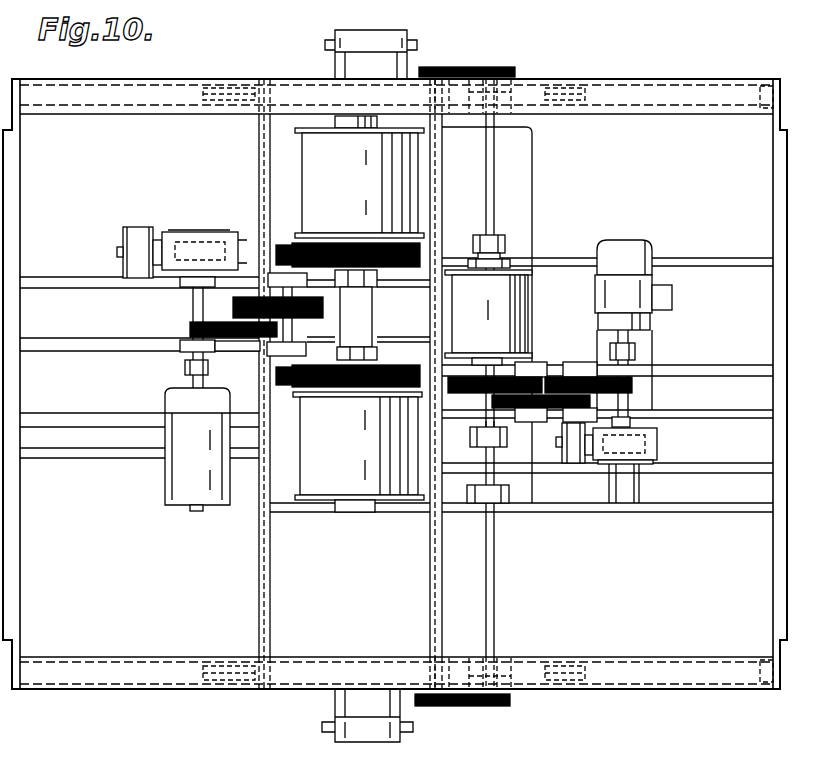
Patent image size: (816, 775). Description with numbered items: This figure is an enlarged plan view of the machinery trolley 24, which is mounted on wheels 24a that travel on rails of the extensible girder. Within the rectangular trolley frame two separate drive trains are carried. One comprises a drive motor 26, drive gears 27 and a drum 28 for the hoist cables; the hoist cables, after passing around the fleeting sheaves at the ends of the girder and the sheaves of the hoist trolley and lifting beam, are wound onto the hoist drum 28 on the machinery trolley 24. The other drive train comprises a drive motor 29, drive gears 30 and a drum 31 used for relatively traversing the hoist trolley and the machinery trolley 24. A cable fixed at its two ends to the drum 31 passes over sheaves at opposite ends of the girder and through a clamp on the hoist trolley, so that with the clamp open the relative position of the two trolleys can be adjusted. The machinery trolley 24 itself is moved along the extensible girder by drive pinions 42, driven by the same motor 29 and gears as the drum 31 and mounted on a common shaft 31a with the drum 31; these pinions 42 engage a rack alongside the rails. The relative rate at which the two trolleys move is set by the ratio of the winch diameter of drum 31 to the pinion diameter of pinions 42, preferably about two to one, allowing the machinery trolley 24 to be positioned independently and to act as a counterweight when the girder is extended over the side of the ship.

The machinery trolley 24 is at (662, 79).
The wheels 24a is at (240, 82).
The drive motor 26 is at (182, 507).
The drive gears 27 is at (262, 352).
The drum 28 is at (360, 192).
The drive motor 29 is at (628, 240).
The drive gears 30 is at (628, 393).
The drum 31 is at (517, 305).
The common shaft 31a is at (492, 597).
The drive pinions 42 is at (470, 67).